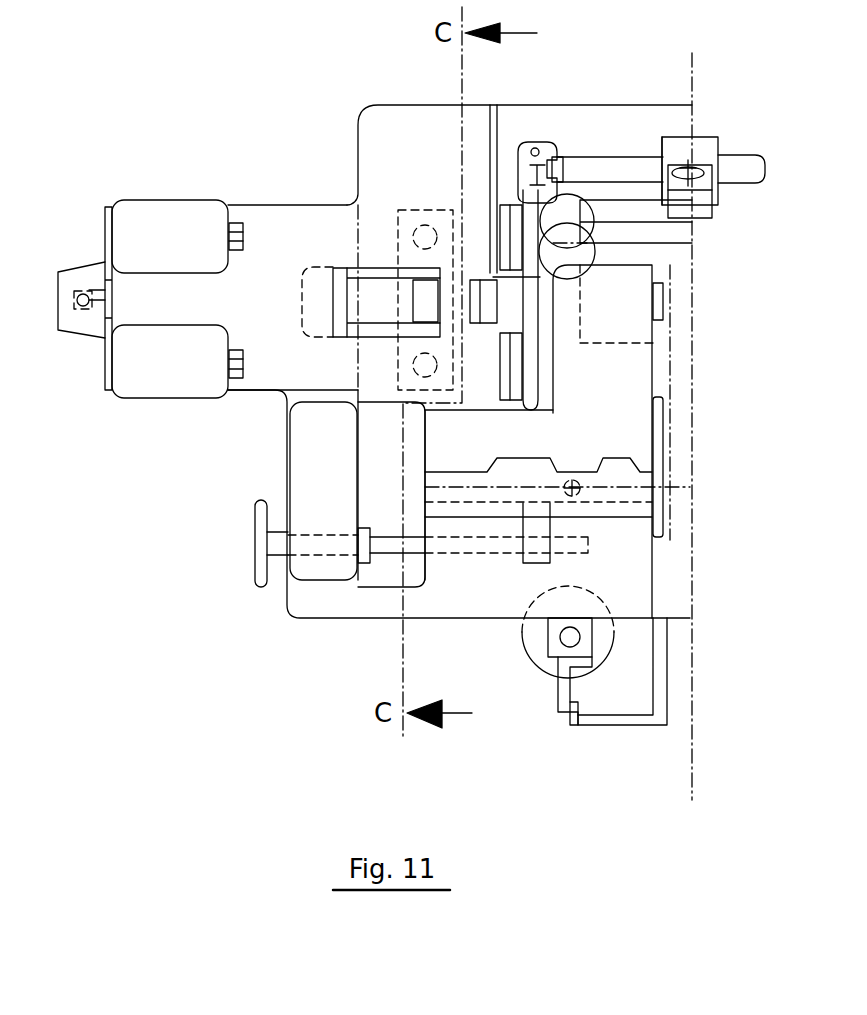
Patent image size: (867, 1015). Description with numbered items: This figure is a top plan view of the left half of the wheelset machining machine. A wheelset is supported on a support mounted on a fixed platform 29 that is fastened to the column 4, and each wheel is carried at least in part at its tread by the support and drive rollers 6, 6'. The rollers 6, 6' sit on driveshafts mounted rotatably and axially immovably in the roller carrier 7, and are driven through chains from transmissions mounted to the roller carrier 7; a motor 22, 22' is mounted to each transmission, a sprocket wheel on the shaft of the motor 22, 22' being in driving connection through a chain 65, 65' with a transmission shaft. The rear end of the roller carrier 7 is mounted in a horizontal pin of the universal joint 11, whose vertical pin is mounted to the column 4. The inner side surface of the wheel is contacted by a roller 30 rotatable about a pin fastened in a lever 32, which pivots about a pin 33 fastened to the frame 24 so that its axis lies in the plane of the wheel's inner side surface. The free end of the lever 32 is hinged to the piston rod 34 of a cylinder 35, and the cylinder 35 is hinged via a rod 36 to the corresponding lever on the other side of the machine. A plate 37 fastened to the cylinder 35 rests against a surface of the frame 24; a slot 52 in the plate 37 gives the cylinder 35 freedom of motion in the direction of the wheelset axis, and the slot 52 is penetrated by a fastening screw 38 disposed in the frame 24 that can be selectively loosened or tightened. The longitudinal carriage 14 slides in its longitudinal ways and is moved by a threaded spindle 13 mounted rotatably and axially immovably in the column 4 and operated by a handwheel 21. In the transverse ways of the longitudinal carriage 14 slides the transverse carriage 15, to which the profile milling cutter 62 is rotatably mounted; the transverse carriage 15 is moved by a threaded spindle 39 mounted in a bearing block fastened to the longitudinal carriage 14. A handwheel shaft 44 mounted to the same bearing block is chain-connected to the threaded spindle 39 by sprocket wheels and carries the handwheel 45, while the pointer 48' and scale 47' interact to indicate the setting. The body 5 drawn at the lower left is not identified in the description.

The column 4 is at (320, 445).
The base body 5 is at (337, 598).
The support and drive roller 6 is at (493, 206).
The support and drive roller 6' is at (542, 366).
The roller carrier 7 is at (293, 243).
The universal joint 11 is at (85, 307).
The threaded spindle 13 is at (395, 550).
The longitudinal carriage 14 is at (463, 482).
The transverse carriage 15 is at (602, 420).
The handwheel 21 is at (262, 560).
The motor 22 is at (170, 213).
The motor 22' is at (170, 381).
The frame 24 is at (637, 222).
The platform 29 is at (384, 290).
The roller 30 is at (500, 193).
The lever 32 is at (535, 150).
The pin 33 is at (537, 148).
The piston rod 34 is at (628, 168).
The cylinder 35 is at (708, 152).
The rod 36 is at (738, 170).
The plate 37 is at (662, 157).
The fastening screw 38 is at (692, 163).
The threaded spindle 39 is at (567, 493).
The handwheel shaft 44 is at (577, 642).
The handwheel 45 is at (535, 667).
The scale 47' is at (587, 745).
The pointer 48' is at (597, 693).
The slot 52 is at (708, 187).
The profile milling cutter 62 is at (483, 297).
The chain 65 is at (218, 201).
The chain 65' is at (228, 397).